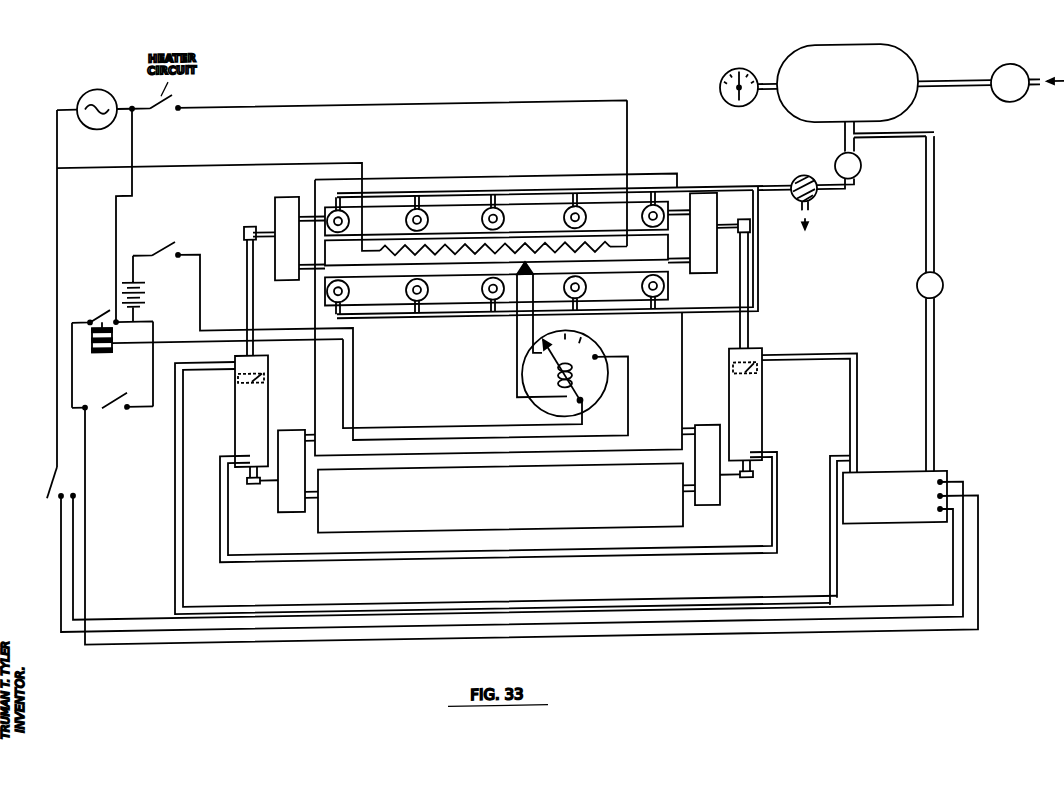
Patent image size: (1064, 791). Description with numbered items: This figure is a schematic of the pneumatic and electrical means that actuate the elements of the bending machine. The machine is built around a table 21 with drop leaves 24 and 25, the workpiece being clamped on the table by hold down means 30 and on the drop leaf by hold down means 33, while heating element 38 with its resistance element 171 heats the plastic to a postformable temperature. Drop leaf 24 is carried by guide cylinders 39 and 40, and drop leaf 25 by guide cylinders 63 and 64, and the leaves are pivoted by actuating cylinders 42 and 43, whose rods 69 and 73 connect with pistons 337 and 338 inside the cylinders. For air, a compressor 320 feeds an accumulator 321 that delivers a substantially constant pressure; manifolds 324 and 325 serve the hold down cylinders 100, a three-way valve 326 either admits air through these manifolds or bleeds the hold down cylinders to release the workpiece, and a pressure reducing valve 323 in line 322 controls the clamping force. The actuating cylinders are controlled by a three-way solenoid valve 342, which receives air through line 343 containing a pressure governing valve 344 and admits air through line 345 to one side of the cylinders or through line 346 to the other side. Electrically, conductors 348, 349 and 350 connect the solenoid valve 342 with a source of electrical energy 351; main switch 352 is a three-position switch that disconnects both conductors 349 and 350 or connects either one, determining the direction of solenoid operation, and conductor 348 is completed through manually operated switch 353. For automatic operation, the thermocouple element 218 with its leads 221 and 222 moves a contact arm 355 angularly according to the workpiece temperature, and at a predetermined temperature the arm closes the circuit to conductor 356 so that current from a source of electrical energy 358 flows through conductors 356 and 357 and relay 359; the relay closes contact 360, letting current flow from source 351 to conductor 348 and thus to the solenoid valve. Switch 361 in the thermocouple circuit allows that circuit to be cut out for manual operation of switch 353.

The table 21 is at (443, 452).
The drop leaf 24 is at (480, 184).
The drop leaf 25 is at (475, 526).
The hold down means 30 is at (380, 309).
The hold down means 33 is at (535, 222).
The heating element 38 is at (330, 267).
The guide cylinder 39 is at (273, 210).
The guide cylinder 40 is at (701, 248).
The actuating cylinder 42 is at (245, 410).
The actuating cylinder 43 is at (733, 407).
The guide cylinder 63 is at (285, 491).
The guide cylinder 64 is at (707, 488).
The rod 69 is at (246, 300).
The rod 73 is at (739, 311).
The hold down cylinders 100 is at (481, 226).
The resistance element 171 is at (613, 259).
The thermocouple arrangement 218 is at (528, 277).
The thermocouple lead 221 is at (541, 333).
The thermocouple lead 222 is at (513, 340).
The air compressor 320 is at (1008, 82).
The accumulator 321 is at (892, 61).
The line 322 is at (860, 148).
The pressure reducing valve 323 is at (838, 175).
The manifold 324 is at (748, 197).
The manifold 325 is at (761, 326).
The three-way valve 326 is at (797, 190).
The piston 337 is at (269, 382).
The piston 338 is at (732, 376).
The solenoid valve 342 is at (917, 541).
The line 343 is at (937, 366).
The pressure governing valve 344 is at (941, 291).
The line 345 is at (230, 520).
The line 346 is at (175, 470).
The conductor 348 is at (88, 482).
The conductor 349 is at (76, 571).
The conductor 350 is at (60, 592).
The source of electrical energy 351 is at (88, 94).
The main switch 352 is at (53, 479).
The switch 353 is at (118, 404).
The movable contact element 355 is at (557, 376).
The conductor 356 is at (628, 392).
The conductor 357 is at (463, 432).
The source of electrical energy 358 is at (147, 300).
The relay 359 is at (97, 353).
The contact 360 is at (113, 321).
The switch 361 is at (380, 338).